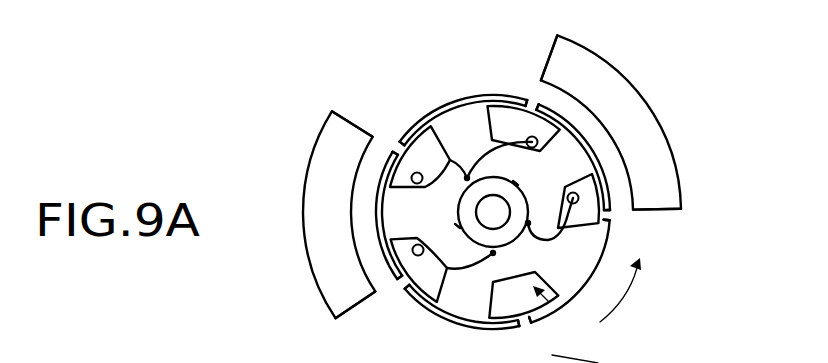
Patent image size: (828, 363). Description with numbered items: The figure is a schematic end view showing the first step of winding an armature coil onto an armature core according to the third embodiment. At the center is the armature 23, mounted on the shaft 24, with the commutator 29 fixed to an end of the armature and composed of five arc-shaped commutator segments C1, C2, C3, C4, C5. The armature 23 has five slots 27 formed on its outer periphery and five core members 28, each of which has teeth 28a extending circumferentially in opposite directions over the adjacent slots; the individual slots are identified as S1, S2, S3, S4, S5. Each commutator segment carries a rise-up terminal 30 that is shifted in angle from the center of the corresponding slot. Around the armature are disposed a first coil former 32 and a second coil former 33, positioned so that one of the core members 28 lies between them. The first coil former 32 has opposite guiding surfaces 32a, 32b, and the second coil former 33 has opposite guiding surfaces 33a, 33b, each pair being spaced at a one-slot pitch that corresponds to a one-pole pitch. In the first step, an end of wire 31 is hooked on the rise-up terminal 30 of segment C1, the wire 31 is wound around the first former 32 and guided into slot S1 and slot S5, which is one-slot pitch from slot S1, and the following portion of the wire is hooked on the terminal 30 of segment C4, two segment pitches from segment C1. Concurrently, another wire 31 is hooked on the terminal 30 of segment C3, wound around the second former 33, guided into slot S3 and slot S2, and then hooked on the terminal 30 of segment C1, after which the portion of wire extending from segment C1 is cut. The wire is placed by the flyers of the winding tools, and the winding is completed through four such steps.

The armature 23 is at (610, 250).
The shaft 24 is at (512, 205).
The slots 27 is at (563, 308).
The core members 28 is at (457, 113).
The teeth 28a is at (413, 126).
The commutator 29 is at (485, 180).
The rise-up terminal 30 is at (470, 196).
The wire 31 is at (458, 266).
The first coil former 32 is at (345, 118).
The guiding surface 32a is at (352, 113).
The guiding surface 32b is at (356, 310).
The second coil former 33 is at (647, 117).
The guiding surface 33a is at (663, 210).
The guiding surface 33b is at (548, 58).
The slot S1 is at (389, 130).
The slot S2 is at (522, 88).
The slot S3 is at (621, 220).
The slot S4 is at (531, 336).
The slot S5 is at (392, 299).
The commutator segment C1 is at (485, 170).
The commutator segment C2 is at (528, 180).
The commutator segment C3 is at (549, 219).
The commutator segment C4 is at (488, 262).
The commutator segment C5 is at (454, 230).